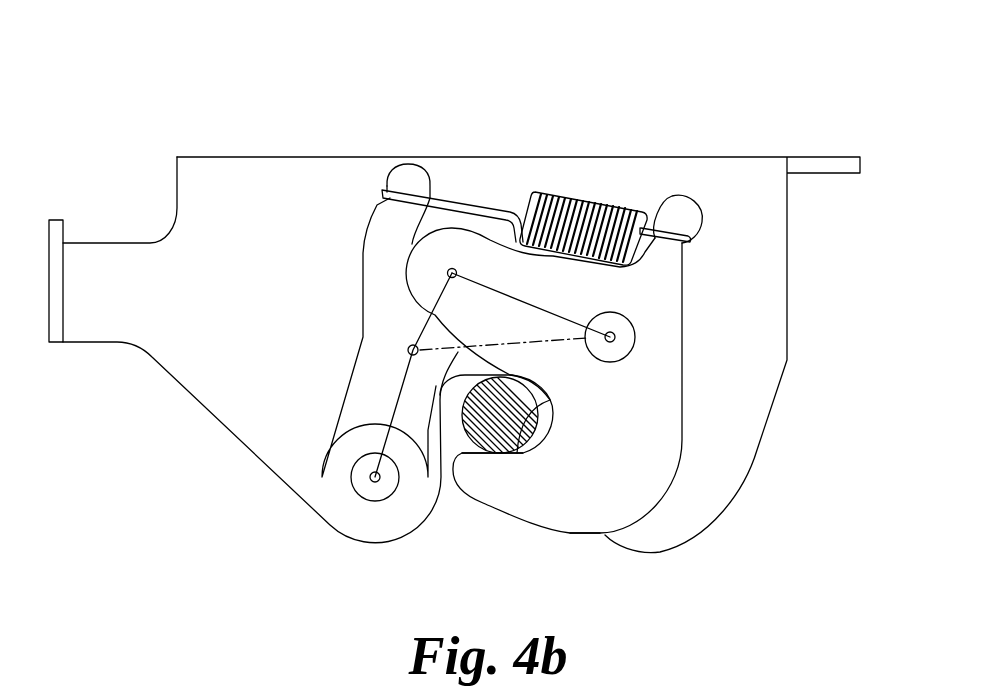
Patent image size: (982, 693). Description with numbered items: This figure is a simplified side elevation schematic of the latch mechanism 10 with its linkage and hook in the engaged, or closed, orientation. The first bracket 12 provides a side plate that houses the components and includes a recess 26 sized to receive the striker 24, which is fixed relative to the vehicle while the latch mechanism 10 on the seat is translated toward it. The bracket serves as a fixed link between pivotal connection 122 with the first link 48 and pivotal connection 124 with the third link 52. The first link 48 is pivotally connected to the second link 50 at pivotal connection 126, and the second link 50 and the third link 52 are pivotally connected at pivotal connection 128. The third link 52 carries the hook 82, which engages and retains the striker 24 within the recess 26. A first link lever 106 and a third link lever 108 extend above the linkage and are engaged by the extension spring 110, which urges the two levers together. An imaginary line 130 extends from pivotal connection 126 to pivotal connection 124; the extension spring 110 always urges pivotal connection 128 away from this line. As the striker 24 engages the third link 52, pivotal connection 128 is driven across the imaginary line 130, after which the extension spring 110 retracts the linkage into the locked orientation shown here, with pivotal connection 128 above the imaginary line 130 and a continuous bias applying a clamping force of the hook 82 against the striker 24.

The latch mechanism 10 is at (558, 100).
The first bracket 12 is at (752, 157).
The striker 24 is at (498, 460).
The recess 26 is at (523, 453).
The first link 48 is at (329, 293).
The second link 50 is at (418, 321).
The third link 52 is at (533, 345).
The hook 82 is at (578, 537).
The first link lever 106 is at (420, 163).
The third link lever 108 is at (690, 193).
The extension spring 110 is at (470, 207).
The pivotal connection 122 is at (375, 501).
The pivotal connection 124 is at (627, 358).
The pivotal connection 126 is at (408, 349).
The pivotal connection 128 is at (407, 253).
The imaginary line 130 is at (553, 338).